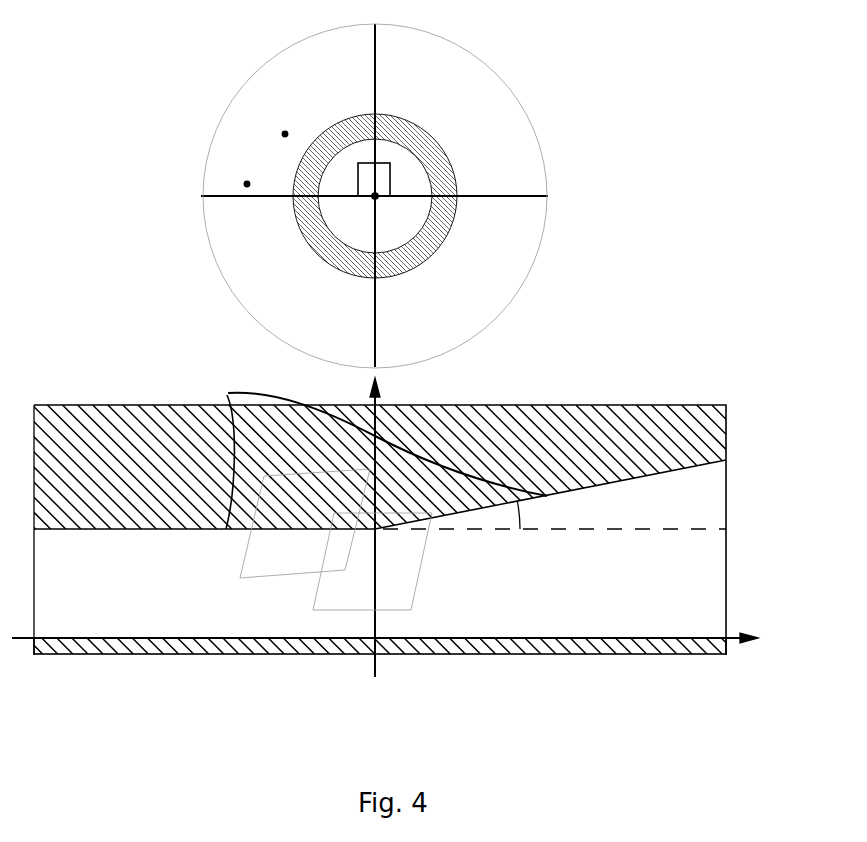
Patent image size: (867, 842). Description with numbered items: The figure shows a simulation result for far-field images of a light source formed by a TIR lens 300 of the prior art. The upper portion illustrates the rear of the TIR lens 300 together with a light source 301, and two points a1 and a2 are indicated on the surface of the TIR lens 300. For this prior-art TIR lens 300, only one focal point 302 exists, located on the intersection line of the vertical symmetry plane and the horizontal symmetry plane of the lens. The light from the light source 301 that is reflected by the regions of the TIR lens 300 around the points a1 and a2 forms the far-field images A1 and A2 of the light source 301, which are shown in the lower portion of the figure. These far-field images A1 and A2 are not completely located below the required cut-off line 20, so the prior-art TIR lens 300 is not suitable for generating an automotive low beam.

The TIR lens 300 is at (257, 80).
The light source 301 is at (370, 180).
The focal point 302 is at (375, 196).
The cut-off line 20 is at (418, 518).
The point a1 is at (246, 172).
The point a2 is at (285, 122).
The far-field image A1 is at (372, 561).
The far-field image A2 is at (305, 523).